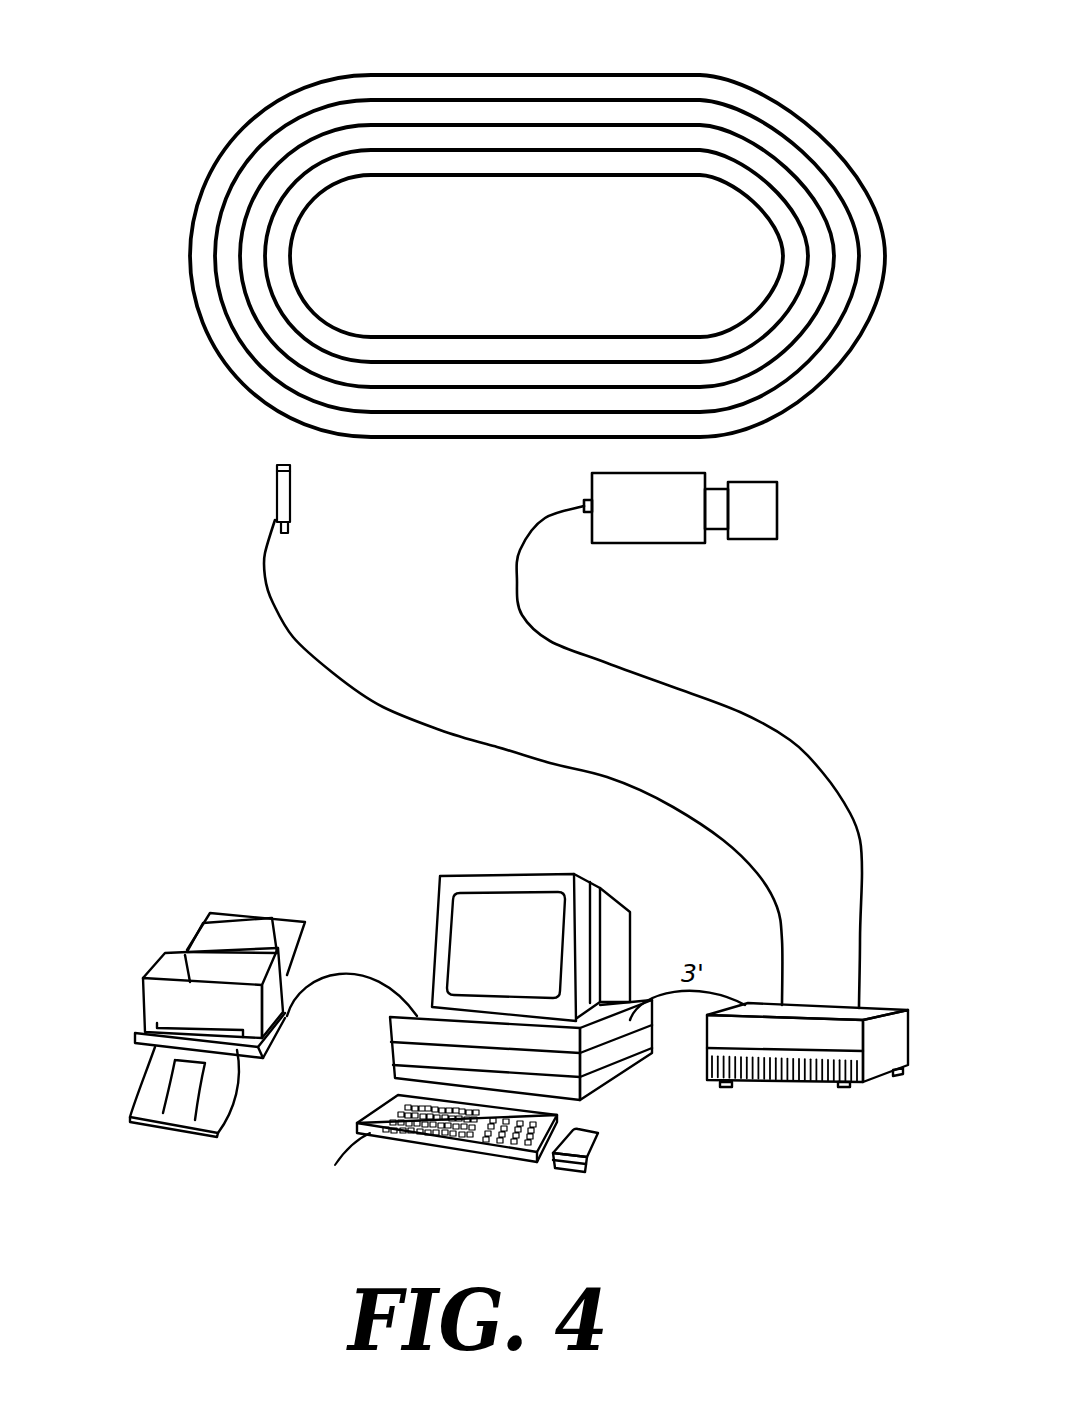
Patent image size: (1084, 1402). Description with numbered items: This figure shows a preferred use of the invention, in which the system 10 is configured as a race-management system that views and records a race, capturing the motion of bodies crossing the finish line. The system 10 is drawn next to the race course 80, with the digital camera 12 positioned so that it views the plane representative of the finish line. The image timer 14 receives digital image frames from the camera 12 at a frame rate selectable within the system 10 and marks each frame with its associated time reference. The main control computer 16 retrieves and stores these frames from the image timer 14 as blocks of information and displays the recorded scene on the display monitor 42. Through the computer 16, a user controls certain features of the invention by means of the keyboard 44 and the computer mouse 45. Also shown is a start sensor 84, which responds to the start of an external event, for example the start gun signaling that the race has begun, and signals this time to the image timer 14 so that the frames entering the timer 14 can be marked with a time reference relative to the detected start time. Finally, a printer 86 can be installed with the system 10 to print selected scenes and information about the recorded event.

The system 10 is at (176, 1174).
The digital camera 12 is at (674, 543).
The image timer 14 is at (875, 1067).
The main control computer 16 is at (441, 848).
The display monitor 42 is at (522, 959).
The keyboard 44 is at (352, 1150).
The computer mouse 45 is at (598, 1142).
The race course 80 is at (317, 72).
The start sensor 84 is at (268, 494).
The printer 86 is at (160, 1003).